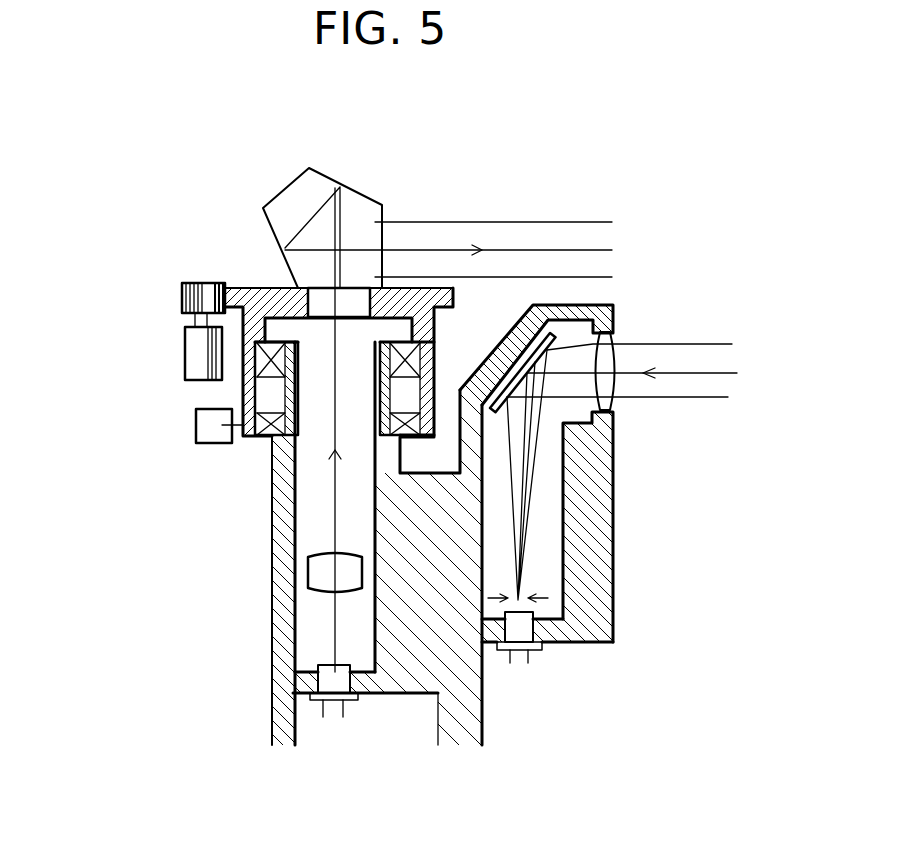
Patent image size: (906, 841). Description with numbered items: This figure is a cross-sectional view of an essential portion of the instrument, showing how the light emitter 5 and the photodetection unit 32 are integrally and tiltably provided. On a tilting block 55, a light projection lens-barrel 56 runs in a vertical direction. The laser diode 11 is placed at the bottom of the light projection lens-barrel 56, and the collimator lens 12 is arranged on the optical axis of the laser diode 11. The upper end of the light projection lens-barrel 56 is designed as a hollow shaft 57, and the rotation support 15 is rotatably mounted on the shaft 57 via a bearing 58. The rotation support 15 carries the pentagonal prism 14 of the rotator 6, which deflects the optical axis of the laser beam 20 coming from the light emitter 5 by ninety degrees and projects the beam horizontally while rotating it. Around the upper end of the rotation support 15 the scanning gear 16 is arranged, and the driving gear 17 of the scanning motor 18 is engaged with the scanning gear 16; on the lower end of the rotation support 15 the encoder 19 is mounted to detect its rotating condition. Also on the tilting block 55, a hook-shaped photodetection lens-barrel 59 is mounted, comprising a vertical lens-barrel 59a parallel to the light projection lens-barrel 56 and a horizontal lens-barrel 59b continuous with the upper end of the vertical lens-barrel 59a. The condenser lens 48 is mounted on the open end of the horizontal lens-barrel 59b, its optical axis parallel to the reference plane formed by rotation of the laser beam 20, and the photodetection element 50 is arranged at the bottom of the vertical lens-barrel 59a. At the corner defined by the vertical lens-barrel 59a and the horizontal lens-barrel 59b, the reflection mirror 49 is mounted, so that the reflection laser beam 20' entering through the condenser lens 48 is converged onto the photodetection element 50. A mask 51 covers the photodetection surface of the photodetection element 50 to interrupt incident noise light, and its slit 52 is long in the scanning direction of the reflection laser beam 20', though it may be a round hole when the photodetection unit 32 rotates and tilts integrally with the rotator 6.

The light emitter 5 is at (169, 568).
The rotator 6 is at (384, 160).
The laser diode 11 is at (322, 668).
The collimator lens 12 is at (320, 592).
The pentagonal prism 14 is at (385, 197).
The rotation support 15 is at (457, 320).
The scanning gear 16 is at (231, 287).
The driving gear 17 is at (182, 292).
The scanning motor 18 is at (185, 352).
The encoder 19 is at (196, 430).
The laser beam 20 is at (449, 218).
The reflection laser beam 20' is at (655, 401).
The photodetection unit 32 is at (629, 622).
The condenser lens 48 is at (618, 362).
The reflection mirror 49 is at (590, 307).
The photodetection element 50 is at (523, 628).
The mask 51 is at (543, 595).
The slit 52 is at (520, 600).
The tilting block 55 is at (263, 578).
The light projection lens-barrel 56 is at (300, 478).
The hollow shaft 57 is at (383, 390).
The bearing 58 is at (412, 392).
The photodetection lens-barrel 59 is at (488, 548).
The vertical lens-barrel 59a is at (537, 547).
The horizontal lens-barrel 59b is at (568, 385).